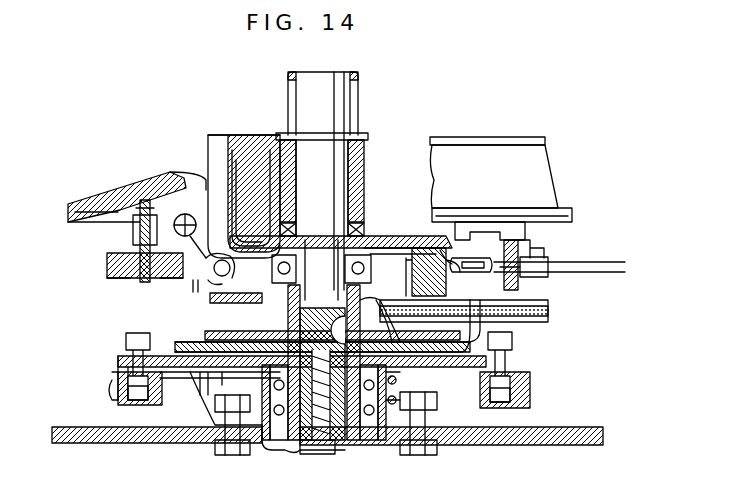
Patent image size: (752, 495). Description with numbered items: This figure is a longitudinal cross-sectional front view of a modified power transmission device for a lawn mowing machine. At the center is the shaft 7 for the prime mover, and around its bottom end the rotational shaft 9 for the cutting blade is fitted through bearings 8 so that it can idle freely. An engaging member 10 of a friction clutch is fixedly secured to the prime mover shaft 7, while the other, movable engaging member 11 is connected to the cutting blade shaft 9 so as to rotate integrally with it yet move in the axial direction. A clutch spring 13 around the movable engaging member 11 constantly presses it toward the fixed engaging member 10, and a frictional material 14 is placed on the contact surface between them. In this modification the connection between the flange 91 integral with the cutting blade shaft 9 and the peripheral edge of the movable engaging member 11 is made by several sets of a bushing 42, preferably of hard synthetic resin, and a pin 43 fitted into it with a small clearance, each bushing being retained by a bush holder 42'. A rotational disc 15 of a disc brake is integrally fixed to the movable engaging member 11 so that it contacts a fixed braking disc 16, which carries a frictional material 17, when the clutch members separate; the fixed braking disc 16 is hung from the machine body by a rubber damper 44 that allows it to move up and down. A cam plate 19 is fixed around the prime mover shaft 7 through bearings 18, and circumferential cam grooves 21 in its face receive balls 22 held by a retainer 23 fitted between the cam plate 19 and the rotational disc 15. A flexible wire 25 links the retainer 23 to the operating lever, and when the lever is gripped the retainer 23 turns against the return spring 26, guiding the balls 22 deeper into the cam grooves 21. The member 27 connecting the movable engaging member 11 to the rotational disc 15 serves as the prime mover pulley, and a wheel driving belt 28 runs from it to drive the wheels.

The shaft for the prime mover 7 is at (288, 102).
The bearings 8 is at (292, 452).
The rotational shaft for a cutting blade 9 is at (400, 448).
The engaging member of a friction clutch 10 is at (178, 336).
The movable engaging member 11 is at (216, 372).
The clutch spring 13 is at (262, 448).
The frictional material 14 is at (196, 385).
The rotational disc 15 is at (505, 330).
The fixed braking disc 16 is at (195, 285).
The frictional material 17 is at (442, 296).
The bearings 18 is at (362, 242).
The cam plate 19 is at (385, 242).
The cam grooves 21 is at (198, 236).
The balls 22 is at (242, 246).
The retainer 23 is at (392, 249).
The flexible wire 25 is at (606, 262).
The return spring 26 is at (174, 198).
The member connecting the movable engaging member and the rotational disc 27 is at (226, 336).
The wheel driving belt 28 is at (266, 341).
The bushing 42 is at (331, 365).
The bush holder 42' is at (316, 391).
The pins 43 is at (130, 400).
The rubber damper 44 is at (107, 262).
The flange 91 is at (118, 378).